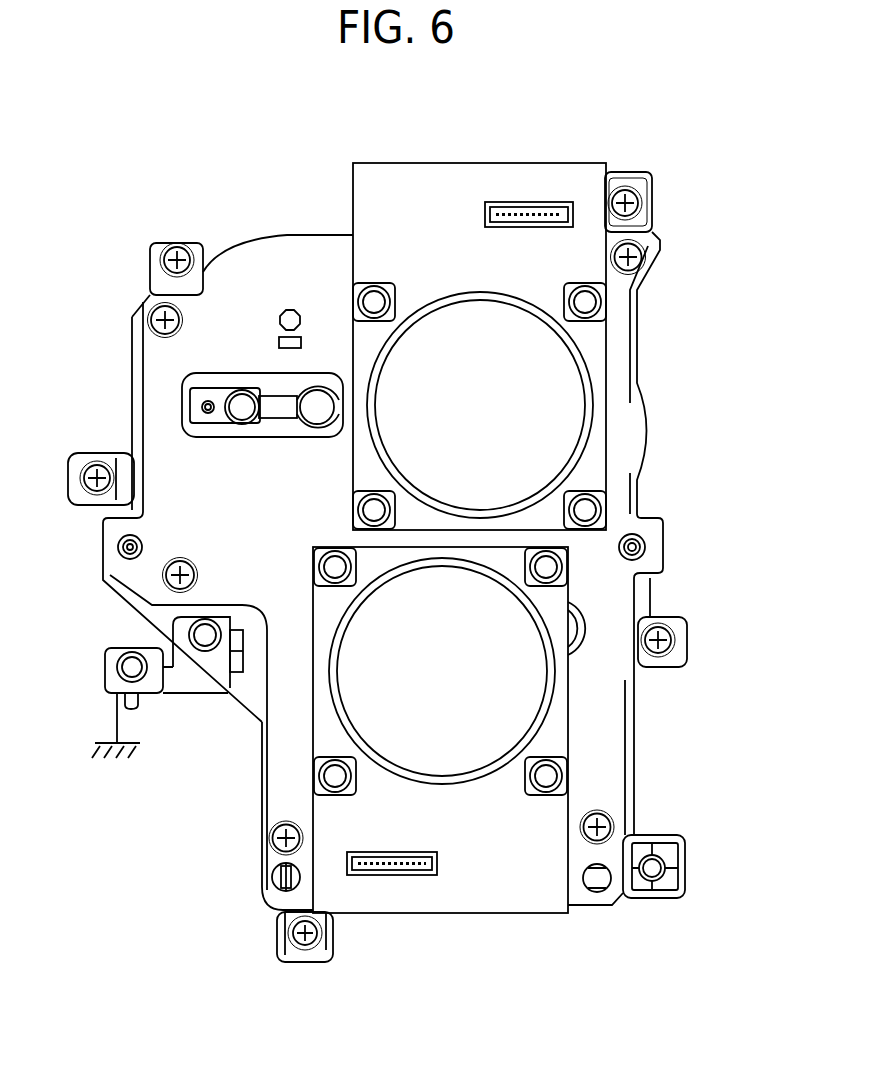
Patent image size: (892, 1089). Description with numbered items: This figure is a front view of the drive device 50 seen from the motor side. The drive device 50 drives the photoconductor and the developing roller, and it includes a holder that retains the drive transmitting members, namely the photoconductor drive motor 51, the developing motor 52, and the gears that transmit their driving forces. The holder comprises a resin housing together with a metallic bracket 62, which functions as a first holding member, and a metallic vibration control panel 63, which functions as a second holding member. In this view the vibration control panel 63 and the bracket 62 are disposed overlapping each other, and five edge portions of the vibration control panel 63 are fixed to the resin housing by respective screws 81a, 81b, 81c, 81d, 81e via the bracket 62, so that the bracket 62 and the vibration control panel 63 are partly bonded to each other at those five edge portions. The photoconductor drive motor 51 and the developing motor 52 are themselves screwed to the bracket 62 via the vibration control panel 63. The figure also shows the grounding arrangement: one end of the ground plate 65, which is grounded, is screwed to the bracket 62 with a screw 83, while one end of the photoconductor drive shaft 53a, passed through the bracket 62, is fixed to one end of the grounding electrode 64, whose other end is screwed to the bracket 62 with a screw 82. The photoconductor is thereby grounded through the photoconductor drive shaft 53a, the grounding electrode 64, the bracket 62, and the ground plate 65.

The drive device 50 is at (658, 426).
The photoconductor drive motor 51 is at (477, 170).
The developing motor 52 is at (492, 908).
The photoconductor drive shaft 53a is at (320, 390).
The bracket 62 is at (132, 388).
The vibration control panel 63 is at (262, 788).
The grounding electrode 64 is at (277, 398).
The ground plate 65 is at (193, 683).
The screw 81a is at (150, 320).
The screw 81b is at (178, 560).
The screw 81c is at (270, 840).
The screw 81d is at (613, 826).
The screw 81e is at (647, 258).
The screw 82 is at (238, 398).
The screw 83 is at (212, 622).